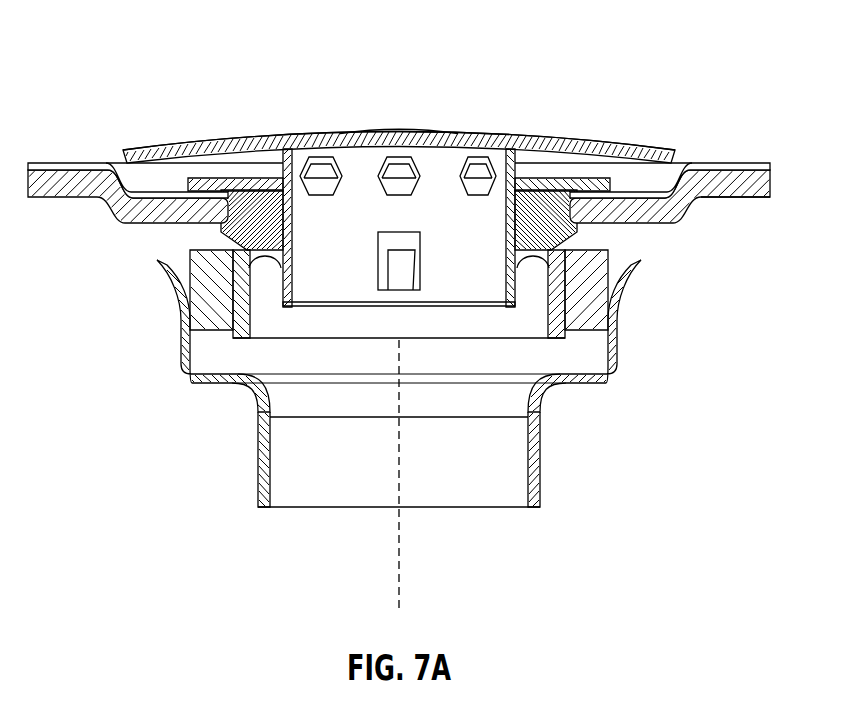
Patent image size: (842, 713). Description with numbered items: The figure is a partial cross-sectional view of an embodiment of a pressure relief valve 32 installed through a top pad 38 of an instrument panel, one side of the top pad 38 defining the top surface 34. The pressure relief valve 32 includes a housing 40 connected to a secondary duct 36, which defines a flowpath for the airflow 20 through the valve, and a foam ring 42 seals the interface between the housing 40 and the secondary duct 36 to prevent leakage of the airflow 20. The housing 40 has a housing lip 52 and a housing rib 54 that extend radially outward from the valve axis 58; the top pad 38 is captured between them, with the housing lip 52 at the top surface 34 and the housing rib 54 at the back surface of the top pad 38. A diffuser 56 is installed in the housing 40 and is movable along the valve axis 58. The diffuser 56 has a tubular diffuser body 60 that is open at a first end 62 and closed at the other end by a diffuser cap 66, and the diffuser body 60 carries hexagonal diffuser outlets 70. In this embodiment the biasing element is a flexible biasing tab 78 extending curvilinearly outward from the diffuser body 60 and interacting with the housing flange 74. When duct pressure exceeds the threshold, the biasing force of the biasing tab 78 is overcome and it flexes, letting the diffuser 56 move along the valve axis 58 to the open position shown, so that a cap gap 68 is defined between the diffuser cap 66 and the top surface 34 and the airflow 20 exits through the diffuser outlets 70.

The airflow 20 is at (86, 139).
The pressure relief valve 32 is at (610, 96).
The top surface 34 is at (755, 165).
The secondary duct 36 is at (541, 482).
The top pad 38 is at (763, 198).
The housing 40 is at (608, 310).
The foam ring 42 is at (200, 303).
The housing lip 52 is at (200, 187).
The housing rib 54 is at (230, 231).
The diffuser 56 is at (312, 130).
The valve axis 58 is at (405, 592).
The diffuser body 60 is at (453, 157).
The first end 62 is at (337, 287).
The diffuser cap 66 is at (423, 132).
The cap gap 68 is at (158, 178).
The diffuser outlets 70 is at (393, 131).
The housing flange 74 is at (278, 243).
The biasing tab 78 is at (400, 274).